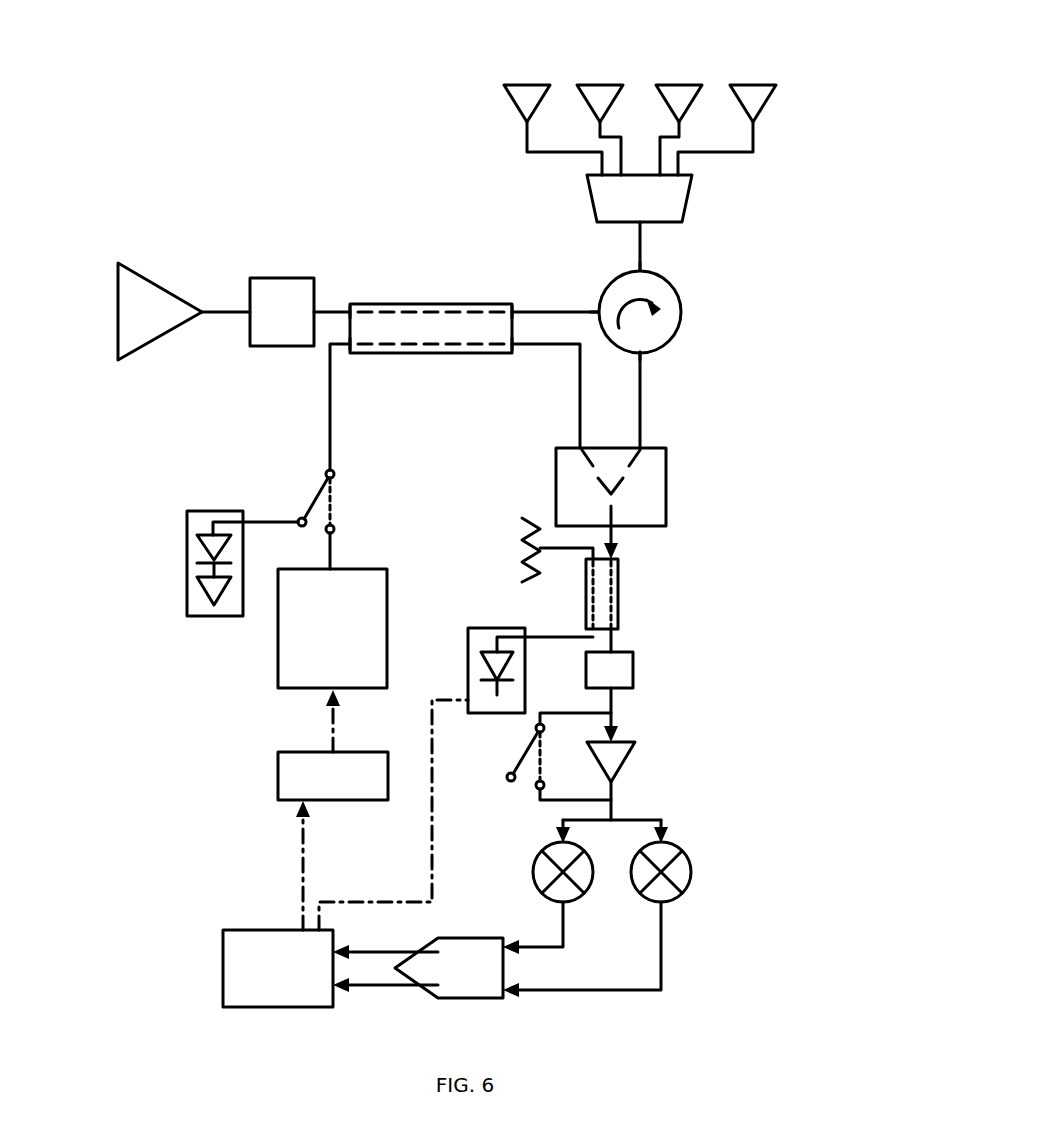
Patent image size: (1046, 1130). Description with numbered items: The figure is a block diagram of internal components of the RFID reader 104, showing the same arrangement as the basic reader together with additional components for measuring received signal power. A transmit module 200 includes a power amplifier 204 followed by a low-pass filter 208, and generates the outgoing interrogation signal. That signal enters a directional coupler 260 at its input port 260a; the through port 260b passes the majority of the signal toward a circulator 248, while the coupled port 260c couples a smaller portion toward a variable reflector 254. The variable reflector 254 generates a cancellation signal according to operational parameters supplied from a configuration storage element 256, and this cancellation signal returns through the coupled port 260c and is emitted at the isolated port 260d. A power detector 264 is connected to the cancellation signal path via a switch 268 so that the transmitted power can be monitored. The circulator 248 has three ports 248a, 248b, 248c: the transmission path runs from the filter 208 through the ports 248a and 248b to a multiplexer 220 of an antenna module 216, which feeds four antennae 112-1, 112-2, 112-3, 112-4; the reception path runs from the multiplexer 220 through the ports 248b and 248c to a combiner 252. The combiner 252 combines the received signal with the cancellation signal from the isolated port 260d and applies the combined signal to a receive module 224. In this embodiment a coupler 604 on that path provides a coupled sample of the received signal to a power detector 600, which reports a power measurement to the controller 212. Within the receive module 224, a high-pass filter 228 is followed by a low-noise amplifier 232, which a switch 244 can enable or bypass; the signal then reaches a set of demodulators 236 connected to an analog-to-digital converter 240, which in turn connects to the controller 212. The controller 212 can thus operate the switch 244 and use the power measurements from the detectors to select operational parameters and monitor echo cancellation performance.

The RFID reader 104 is at (213, 88).
The transmit module 200 is at (210, 218).
The antenna module 216 is at (468, 100).
The antenna 112-1 is at (527, 85).
The antenna 112-2 is at (600, 85).
The antenna 112-3 is at (679, 85).
The antenna 112-4 is at (753, 85).
The multiplexer 220 is at (587, 198).
The power amplifier 204 is at (118, 298).
The low-pass filter 208 is at (282, 278).
The coupler 260 is at (430, 353).
The input port 260a is at (350, 308).
The through port 260b is at (512, 308).
The coupled port 260c is at (350, 352).
The isolated port 260d is at (520, 350).
The circulator 248 is at (683, 312).
The port 248a is at (598, 310).
The port 248b is at (640, 268).
The port 248c is at (640, 352).
The combiner 252 is at (666, 488).
The power detector 600 is at (483, 628).
The coupler 604 is at (618, 595).
The high-pass filter 228 is at (633, 670).
The receive module 224 is at (752, 698).
The low-noise amplifier 232 is at (635, 762).
The switch 244 is at (538, 787).
The demodulators 236 is at (691, 865).
The analog-to-digital converter 240 is at (460, 998).
The controller 212 is at (223, 968).
The configuration storage element 256 is at (278, 775).
The variable reflector 254 is at (387, 628).
The power detector 264 is at (187, 527).
The switch 268 is at (312, 498).